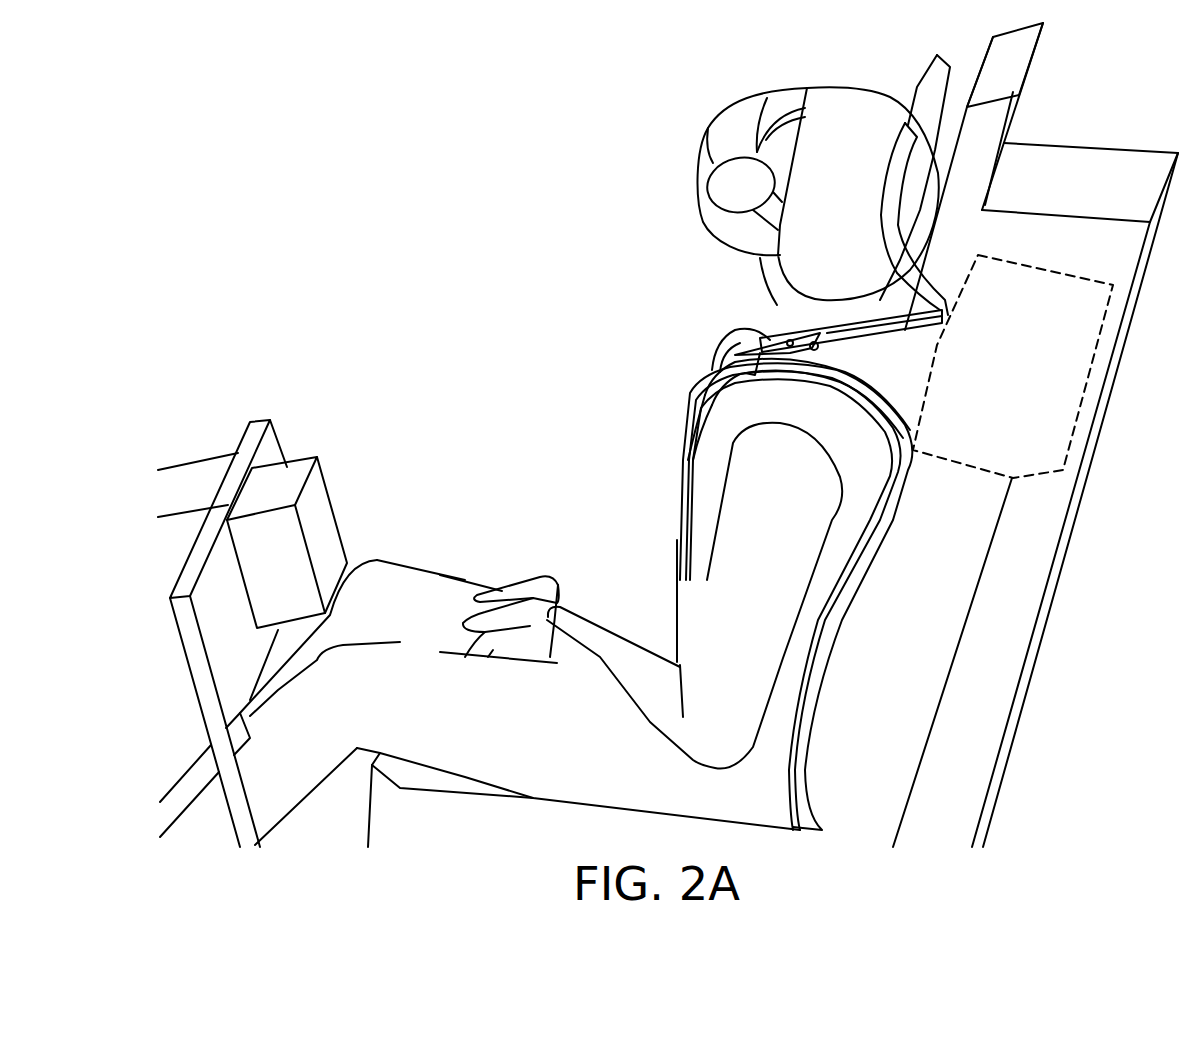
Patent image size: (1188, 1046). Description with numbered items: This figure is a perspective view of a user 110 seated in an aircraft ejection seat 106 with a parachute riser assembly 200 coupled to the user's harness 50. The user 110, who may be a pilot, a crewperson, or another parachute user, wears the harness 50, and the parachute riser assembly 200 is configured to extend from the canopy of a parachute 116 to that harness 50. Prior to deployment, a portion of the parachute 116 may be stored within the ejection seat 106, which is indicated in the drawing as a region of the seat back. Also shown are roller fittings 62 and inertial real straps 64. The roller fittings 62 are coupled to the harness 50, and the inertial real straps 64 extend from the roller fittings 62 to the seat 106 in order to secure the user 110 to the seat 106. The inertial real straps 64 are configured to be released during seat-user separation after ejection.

The user 110 is at (493, 334).
The ejection seat 106 is at (908, 677).
The parachute 116 is at (1024, 382).
The inertial real straps 64 is at (925, 392).
The harness 50 is at (708, 368).
The roller fittings 62 is at (765, 318).
The parachute riser assembly 200 is at (850, 385).